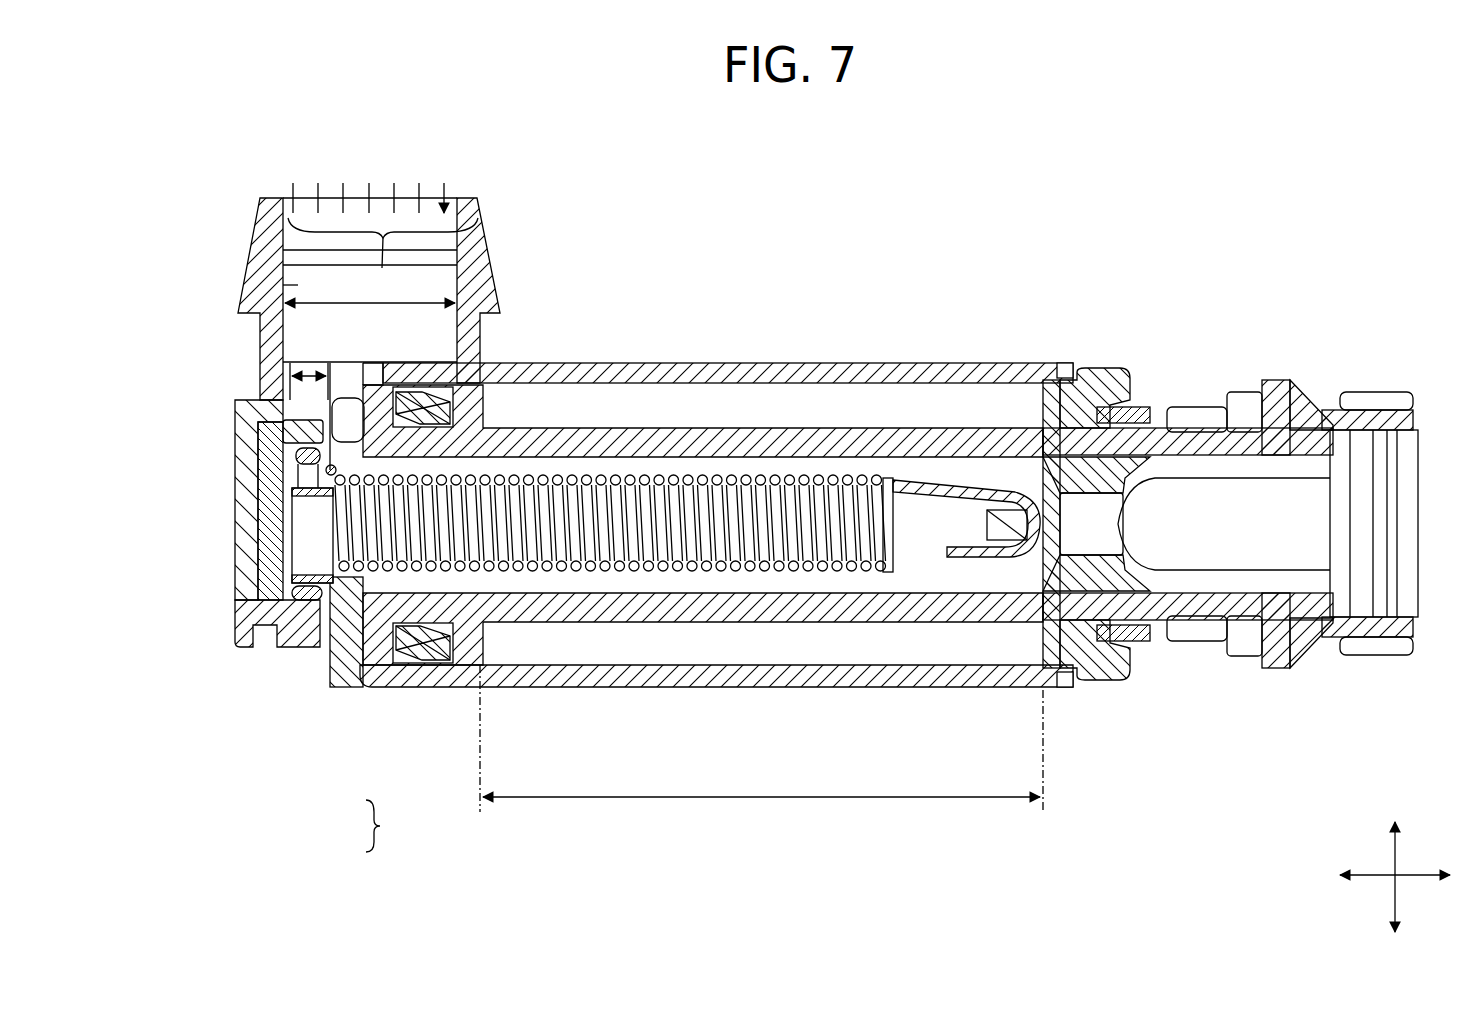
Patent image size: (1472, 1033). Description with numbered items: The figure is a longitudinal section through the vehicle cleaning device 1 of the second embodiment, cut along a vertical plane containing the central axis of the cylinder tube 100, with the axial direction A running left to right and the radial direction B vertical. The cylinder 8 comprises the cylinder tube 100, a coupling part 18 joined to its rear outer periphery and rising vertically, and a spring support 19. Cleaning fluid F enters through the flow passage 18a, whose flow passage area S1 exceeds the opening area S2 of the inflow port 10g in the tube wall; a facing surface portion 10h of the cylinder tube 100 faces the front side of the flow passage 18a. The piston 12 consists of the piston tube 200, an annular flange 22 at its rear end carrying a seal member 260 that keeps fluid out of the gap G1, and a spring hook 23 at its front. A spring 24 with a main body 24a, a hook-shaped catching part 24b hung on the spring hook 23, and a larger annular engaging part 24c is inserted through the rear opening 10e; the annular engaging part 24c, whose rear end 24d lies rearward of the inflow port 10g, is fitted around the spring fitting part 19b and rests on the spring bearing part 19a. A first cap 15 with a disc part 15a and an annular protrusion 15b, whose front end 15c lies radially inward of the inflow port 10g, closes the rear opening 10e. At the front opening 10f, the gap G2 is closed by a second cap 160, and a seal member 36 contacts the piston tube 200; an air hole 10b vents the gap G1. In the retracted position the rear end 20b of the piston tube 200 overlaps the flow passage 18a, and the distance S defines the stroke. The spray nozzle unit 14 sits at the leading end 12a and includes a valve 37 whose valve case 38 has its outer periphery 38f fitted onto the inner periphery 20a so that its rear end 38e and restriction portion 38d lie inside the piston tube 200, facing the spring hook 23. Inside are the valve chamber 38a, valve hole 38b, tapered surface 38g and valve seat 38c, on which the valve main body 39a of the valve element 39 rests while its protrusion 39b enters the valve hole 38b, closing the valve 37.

The vehicle cleaning device 1 is at (808, 911).
The cylinder 8 is at (742, 304).
The air hole 10b is at (1058, 364).
The opening 10e is at (262, 608).
The opening 10f is at (1085, 682).
The inflow port 10g is at (380, 385).
The facing surface portion 10h is at (440, 360).
The piston 12 is at (566, 628).
The leading end 12a is at (1222, 406).
The spray nozzle unit 14 is at (1338, 318).
The first cap 15 is at (240, 647).
The disc part 15a is at (262, 564).
The annular protrusion 15b is at (318, 635).
The front end 15c is at (268, 410).
The coupling part 18 is at (478, 275).
The flow passage 18a is at (298, 285).
The spring support 19 is at (388, 826).
The spring bearing part 19a is at (313, 598).
The spring fitting part 19b is at (300, 470).
The inner periphery 20a is at (1030, 455).
The rear end 20b is at (300, 405).
The annular flange 22 is at (470, 665).
The spring hook 23 is at (1000, 508).
The spring 24 is at (838, 572).
The main body 24a is at (700, 562).
The catching part 24b is at (958, 482).
The annular engaging part 24c is at (312, 600).
The rear end 24d is at (296, 568).
The seal member 36 is at (1120, 372).
The valve 37 is at (1234, 362).
The valve case 38 is at (1300, 640).
The valve chamber 38a is at (1268, 600).
The valve hole 38b is at (1053, 692).
The valve seat 38c is at (1160, 424).
The restriction portion 38d is at (1050, 600).
The rear end 38e is at (1066, 606).
The outer periphery 38f is at (1140, 660).
The tapered surface 38g is at (1122, 598).
The valve element 39 is at (1272, 636).
The valve main body 39a is at (1225, 642).
The protrusion 39b is at (1108, 672).
The cylinder tube 100 is at (645, 362).
The second cap 160 is at (1078, 368).
The piston tube 200 is at (780, 428).
The seal member 260 is at (425, 662).
The axial direction A is at (1400, 876).
The radial direction B is at (1396, 855).
The cleaning fluid F is at (370, 290).
The gap G1 is at (772, 654).
The gap G2 is at (1108, 372).
The distance S is at (740, 815).
The flow passage area S1 is at (372, 305).
The opening area S2 is at (330, 410).